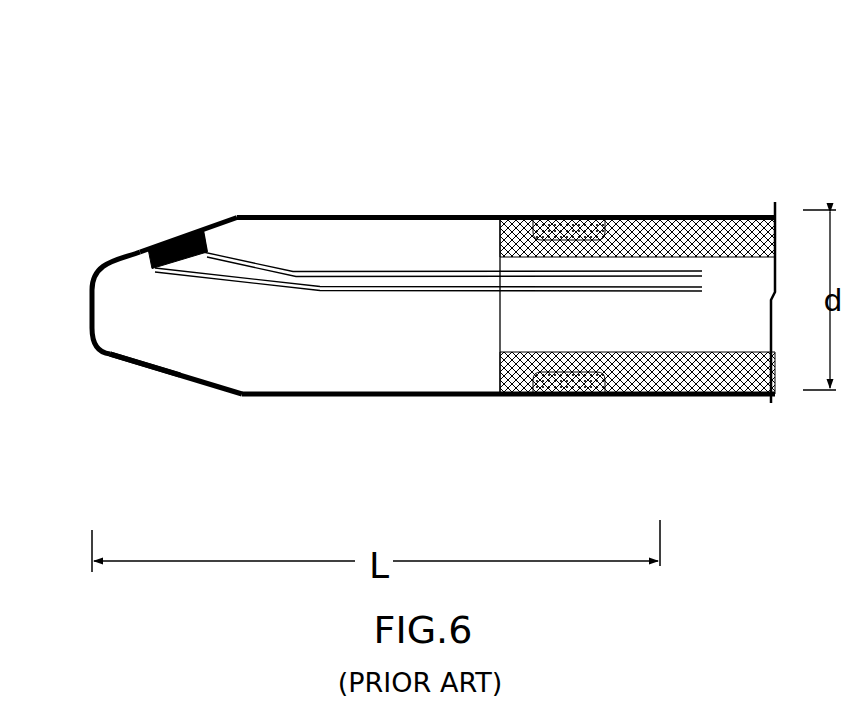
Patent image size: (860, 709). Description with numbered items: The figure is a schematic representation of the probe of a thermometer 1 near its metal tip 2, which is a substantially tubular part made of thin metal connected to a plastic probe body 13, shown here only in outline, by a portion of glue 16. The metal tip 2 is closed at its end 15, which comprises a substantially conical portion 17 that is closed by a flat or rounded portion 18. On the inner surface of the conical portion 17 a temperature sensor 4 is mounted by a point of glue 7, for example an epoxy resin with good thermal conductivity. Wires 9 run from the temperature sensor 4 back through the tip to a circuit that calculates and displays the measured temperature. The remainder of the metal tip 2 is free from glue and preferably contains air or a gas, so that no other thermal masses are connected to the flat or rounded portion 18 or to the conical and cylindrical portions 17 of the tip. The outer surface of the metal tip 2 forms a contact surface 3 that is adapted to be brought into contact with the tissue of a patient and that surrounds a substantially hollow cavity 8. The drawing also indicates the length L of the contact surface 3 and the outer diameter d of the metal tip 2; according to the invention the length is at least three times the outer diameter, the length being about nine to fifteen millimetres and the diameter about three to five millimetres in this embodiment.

The thermometer 1 is at (355, 187).
The metal tip 2 is at (267, 216).
The contact surface 3 is at (327, 396).
The temperature sensor 4 is at (180, 236).
The point of glue 7 is at (205, 241).
The hollow cavity 8 is at (242, 317).
The wires 9 is at (428, 278).
The probe body 13 is at (682, 216).
The end 15 is at (88, 300).
The portion of glue 16 is at (560, 215).
The conical portion 17 is at (145, 372).
The flat or rounded portion 18 is at (88, 327).